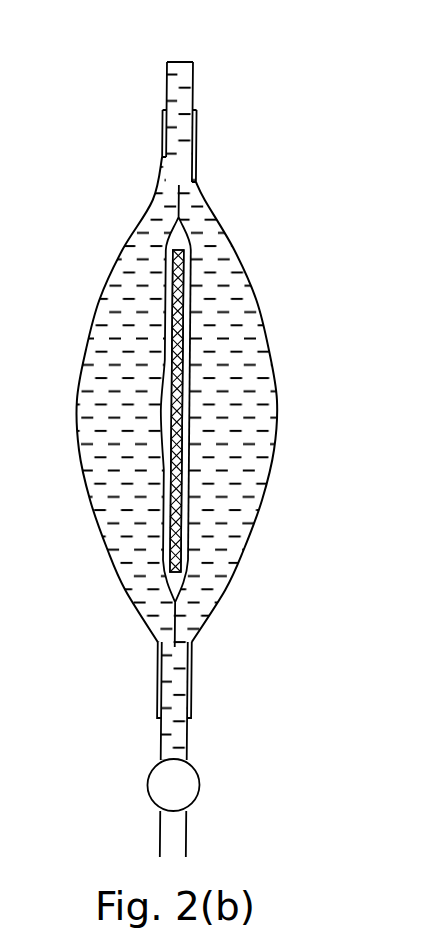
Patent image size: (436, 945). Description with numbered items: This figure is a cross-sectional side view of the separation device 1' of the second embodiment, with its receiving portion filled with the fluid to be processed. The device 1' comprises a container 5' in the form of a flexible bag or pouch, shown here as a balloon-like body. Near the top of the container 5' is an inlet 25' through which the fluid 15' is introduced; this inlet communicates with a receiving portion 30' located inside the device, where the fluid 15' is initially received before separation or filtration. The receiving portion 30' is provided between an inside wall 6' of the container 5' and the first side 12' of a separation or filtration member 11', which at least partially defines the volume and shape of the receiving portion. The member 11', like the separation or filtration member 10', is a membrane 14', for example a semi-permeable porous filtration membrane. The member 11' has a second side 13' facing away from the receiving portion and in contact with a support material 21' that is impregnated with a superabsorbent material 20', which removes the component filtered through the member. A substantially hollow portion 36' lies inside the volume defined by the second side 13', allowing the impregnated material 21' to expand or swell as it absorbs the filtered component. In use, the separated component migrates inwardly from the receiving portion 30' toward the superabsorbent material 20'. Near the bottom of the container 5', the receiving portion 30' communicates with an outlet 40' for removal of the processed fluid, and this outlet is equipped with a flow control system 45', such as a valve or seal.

The separation device 1' is at (200, 441).
The inlet 25' is at (152, 122).
The container 5' is at (175, 399).
The inside wall 6' is at (176, 399).
The receiving portion 30' is at (156, 411).
The fluid 15' is at (159, 411).
The separation or filtration member 10' is at (243, 416).
The first separation or filtration member 11' is at (248, 405).
The membrane 14' is at (244, 405).
The hollow portion 36' is at (229, 585).
The first side 12' is at (200, 411).
The second side 13' is at (108, 411).
The superabsorbent material 20' is at (268, 411).
The support material 21' is at (177, 411).
The outlet 40' is at (148, 749).
The flow control system 45' is at (154, 786).